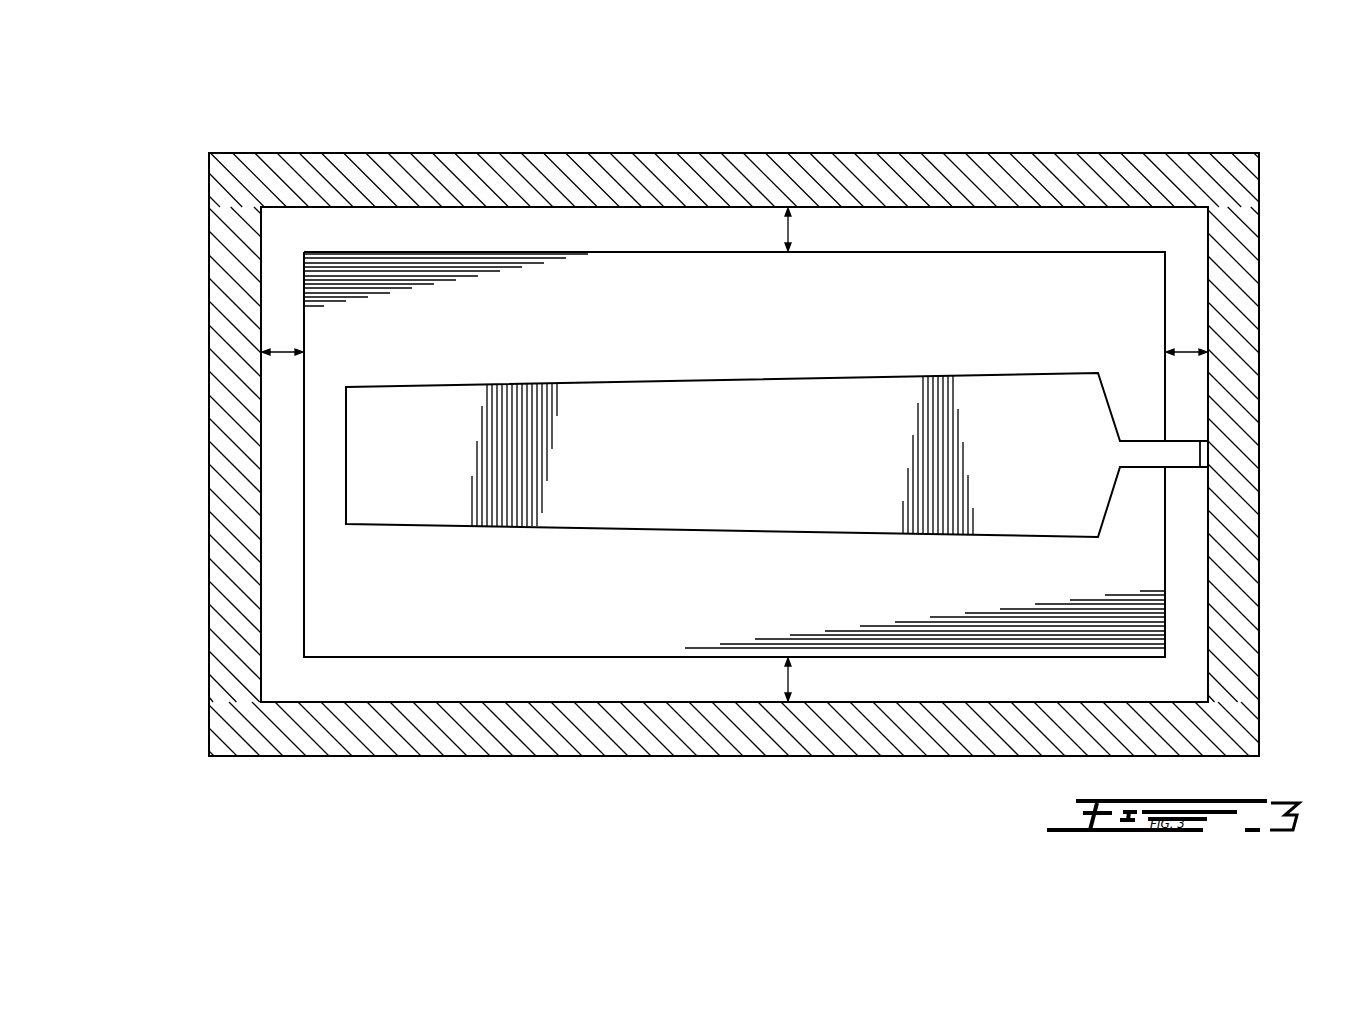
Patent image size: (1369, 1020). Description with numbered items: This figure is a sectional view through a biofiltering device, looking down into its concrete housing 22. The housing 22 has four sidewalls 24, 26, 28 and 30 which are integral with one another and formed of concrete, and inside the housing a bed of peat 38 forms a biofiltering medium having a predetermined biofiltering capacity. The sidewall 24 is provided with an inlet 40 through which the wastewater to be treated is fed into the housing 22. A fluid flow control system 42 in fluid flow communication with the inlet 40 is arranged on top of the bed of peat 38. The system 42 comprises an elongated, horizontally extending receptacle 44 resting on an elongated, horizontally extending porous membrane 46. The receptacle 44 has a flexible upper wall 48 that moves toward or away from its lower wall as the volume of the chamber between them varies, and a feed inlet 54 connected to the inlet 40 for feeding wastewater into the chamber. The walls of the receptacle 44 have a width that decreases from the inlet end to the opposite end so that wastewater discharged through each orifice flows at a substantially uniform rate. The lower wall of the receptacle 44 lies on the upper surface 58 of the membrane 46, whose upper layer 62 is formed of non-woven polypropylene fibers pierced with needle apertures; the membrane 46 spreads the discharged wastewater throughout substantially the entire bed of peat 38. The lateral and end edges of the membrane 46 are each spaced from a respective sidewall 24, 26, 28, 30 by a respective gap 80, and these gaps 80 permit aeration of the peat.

The housing 22 is at (1006, 140).
The sidewall 24 is at (1235, 250).
The sidewall 26 is at (228, 590).
The sidewall 28 is at (676, 725).
The sidewall 30 is at (700, 178).
The bed of peat 38 is at (1200, 605).
The inlet 40 is at (1260, 452).
The fluid flow control system 42 is at (268, 464).
The receptacle 44 is at (772, 362).
The porous membrane 46 is at (487, 674).
The upper wall 48 is at (716, 500).
The feed inlet 54 is at (1150, 457).
The upper surface 58 is at (523, 597).
The upper layer 62 is at (495, 325).
The gap 80 is at (790, 225).